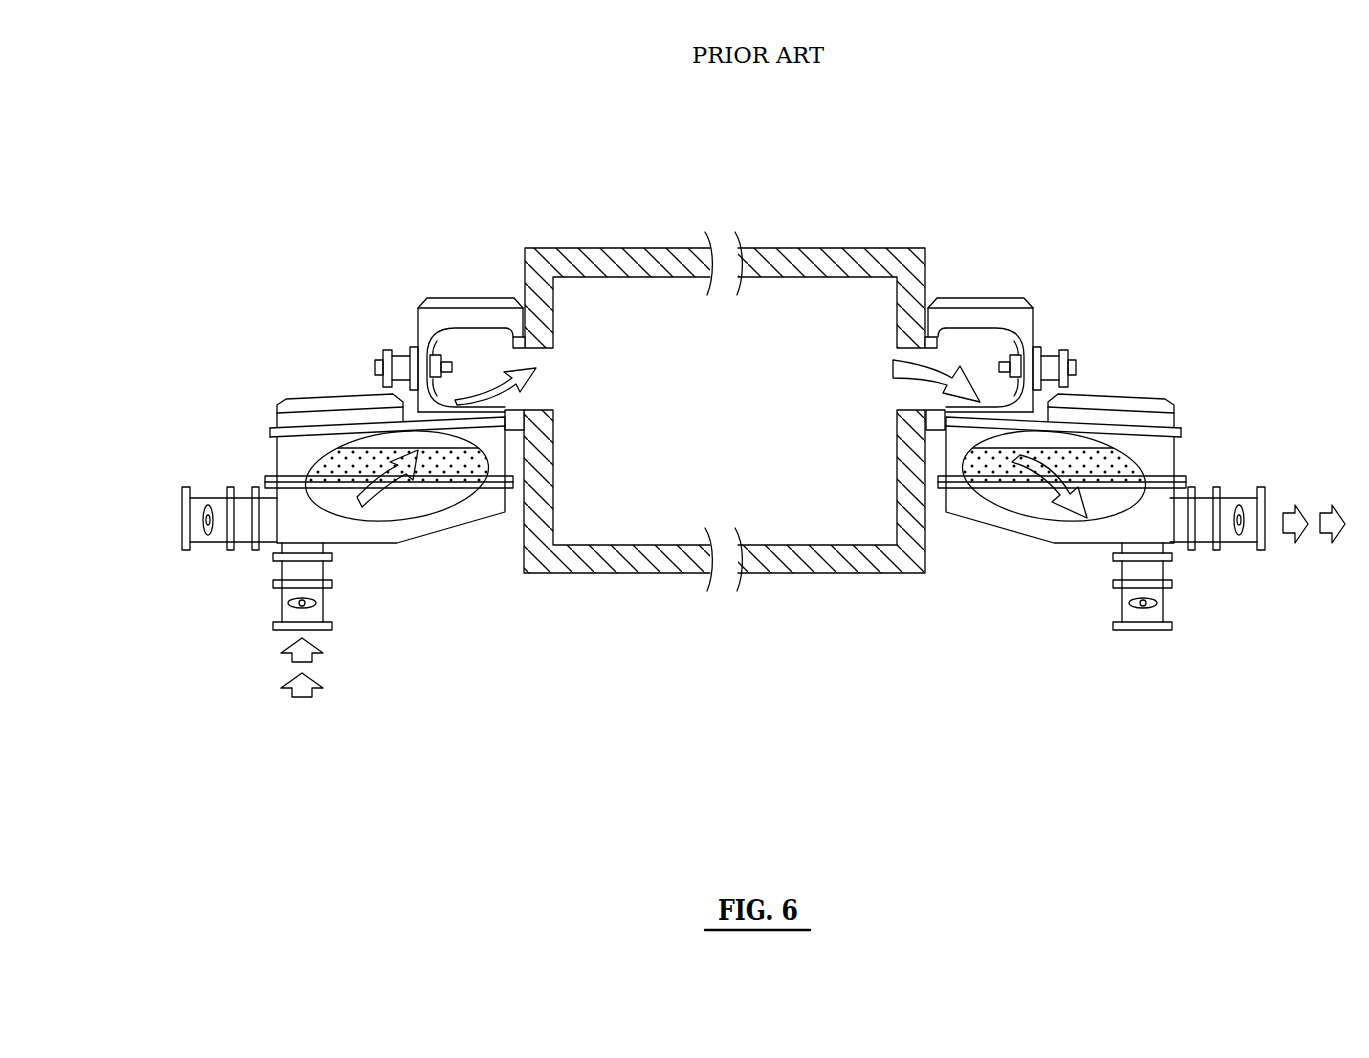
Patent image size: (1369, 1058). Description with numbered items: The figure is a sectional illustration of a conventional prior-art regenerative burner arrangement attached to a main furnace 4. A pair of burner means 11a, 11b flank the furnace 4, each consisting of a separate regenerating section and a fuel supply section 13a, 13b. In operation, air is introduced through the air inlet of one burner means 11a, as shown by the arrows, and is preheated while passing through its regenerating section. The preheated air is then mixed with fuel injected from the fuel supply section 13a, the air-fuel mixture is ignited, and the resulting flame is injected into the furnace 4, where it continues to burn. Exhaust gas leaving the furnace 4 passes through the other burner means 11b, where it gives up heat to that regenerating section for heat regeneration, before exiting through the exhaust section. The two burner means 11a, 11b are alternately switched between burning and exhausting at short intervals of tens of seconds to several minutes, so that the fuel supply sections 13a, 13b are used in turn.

The furnace 4 is at (831, 248).
The burner means 11a is at (226, 467).
The burner means 11b is at (977, 288).
The fuel supply section 13a is at (375, 367).
The fuel supply section 13b is at (1076, 368).